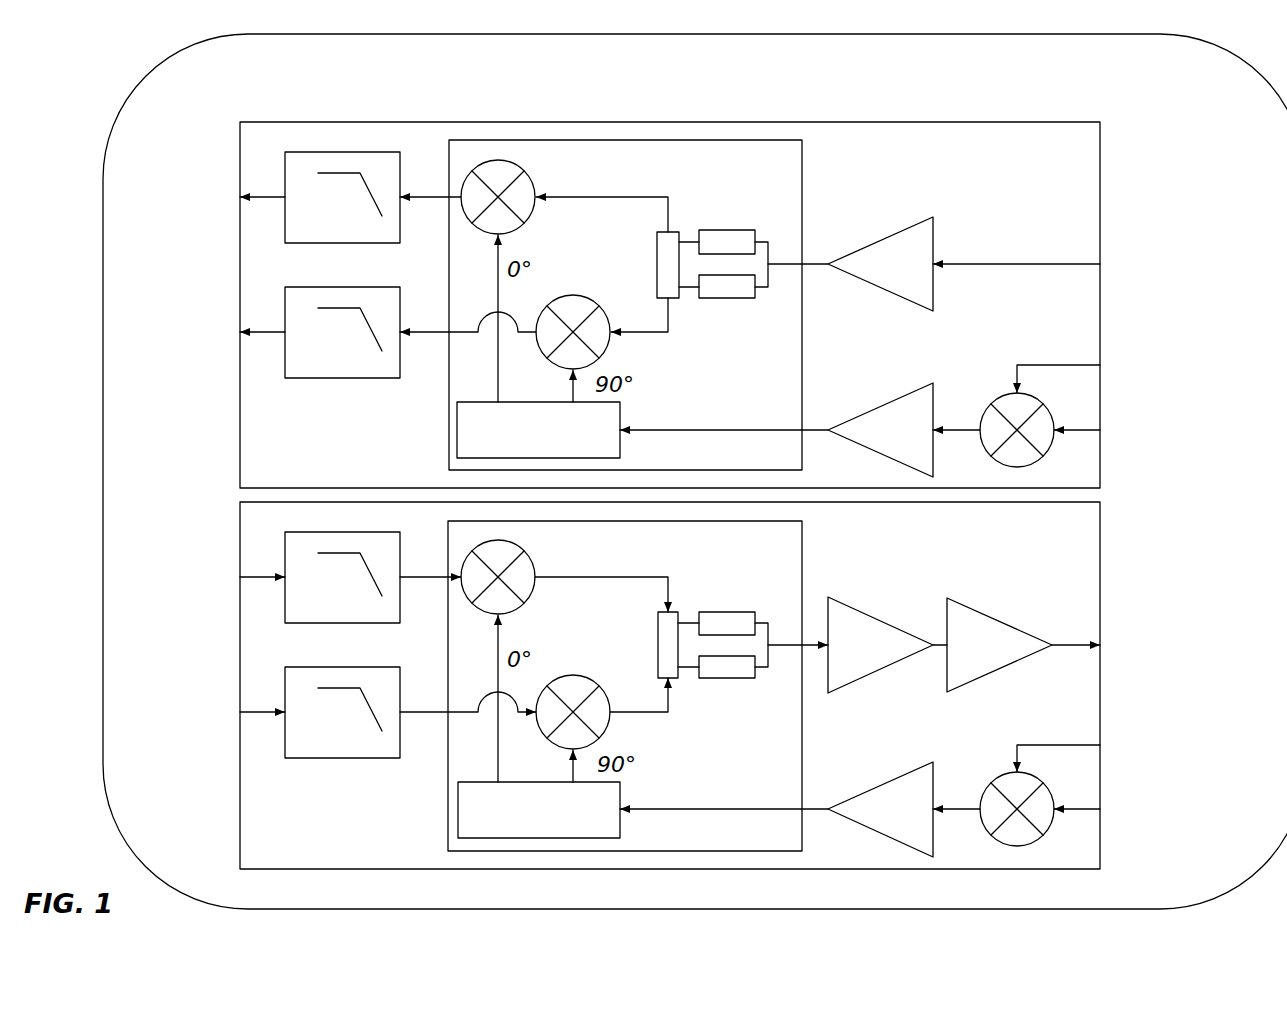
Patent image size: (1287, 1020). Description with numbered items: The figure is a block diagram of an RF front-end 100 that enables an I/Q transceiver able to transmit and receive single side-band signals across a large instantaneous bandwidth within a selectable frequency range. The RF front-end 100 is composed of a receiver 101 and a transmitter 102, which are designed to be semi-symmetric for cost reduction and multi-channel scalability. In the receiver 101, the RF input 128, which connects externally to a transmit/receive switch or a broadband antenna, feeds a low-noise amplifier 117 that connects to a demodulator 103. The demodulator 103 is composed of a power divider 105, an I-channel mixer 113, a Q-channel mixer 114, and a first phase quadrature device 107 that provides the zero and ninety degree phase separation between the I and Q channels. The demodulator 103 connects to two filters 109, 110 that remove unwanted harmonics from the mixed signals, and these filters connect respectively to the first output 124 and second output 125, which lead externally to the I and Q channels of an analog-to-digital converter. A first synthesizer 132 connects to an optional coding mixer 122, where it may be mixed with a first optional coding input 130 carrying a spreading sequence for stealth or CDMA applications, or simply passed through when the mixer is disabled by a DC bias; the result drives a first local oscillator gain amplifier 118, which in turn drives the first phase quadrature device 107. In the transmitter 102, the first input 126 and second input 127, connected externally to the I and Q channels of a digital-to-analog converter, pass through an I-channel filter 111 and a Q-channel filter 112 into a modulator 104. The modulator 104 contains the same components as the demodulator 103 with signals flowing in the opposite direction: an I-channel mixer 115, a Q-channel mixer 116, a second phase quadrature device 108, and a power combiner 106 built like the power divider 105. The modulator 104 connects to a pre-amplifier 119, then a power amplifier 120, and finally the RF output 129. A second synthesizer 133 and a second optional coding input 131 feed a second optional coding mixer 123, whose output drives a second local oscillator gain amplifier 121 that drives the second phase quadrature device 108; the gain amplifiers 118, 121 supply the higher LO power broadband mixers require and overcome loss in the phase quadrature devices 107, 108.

The RF front-end 100 is at (727, 84).
The receiver 101 is at (1077, 161).
The transmitter 102 is at (1077, 541).
The demodulator 103 is at (778, 184).
The modulator 104 is at (780, 566).
The power divider 105 is at (723, 298).
The power combiner 106 is at (723, 678).
The first phase quadrature device 107 is at (558, 442).
The second phase quadrature device 108 is at (558, 826).
The filter 109 is at (362, 236).
The filter 110 is at (362, 371).
The I-channel filter 111 is at (362, 616).
The Q-channel filter 112 is at (362, 751).
The I-channel mixer 113 is at (526, 172).
The Q-channel mixer 114 is at (573, 295).
The I-channel mixer 115 is at (527, 553).
The Q-channel mixer 116 is at (573, 675).
The low-noise amplifier 117 is at (917, 277).
The first local oscillator gain amplifier 118 is at (917, 442).
The pre-amplifier 119 is at (883, 661).
The power amplifier 120 is at (1000, 654).
The second local oscillator gain amplifier 121 is at (917, 824).
The optional coding mixer 122 is at (995, 402).
The second optional coding mixer 123 is at (995, 781).
The first output 124 is at (230, 208).
The second output 125 is at (230, 344).
The first input 126 is at (230, 589).
The second input 127 is at (230, 726).
The RF input 128 is at (1150, 277).
The RF output 129 is at (1150, 657).
The first optional coding input 130 is at (1150, 379).
The second optional coding input 131 is at (1150, 757).
The first synthesizer 132 is at (1150, 442).
The second synthesizer 133 is at (1150, 822).